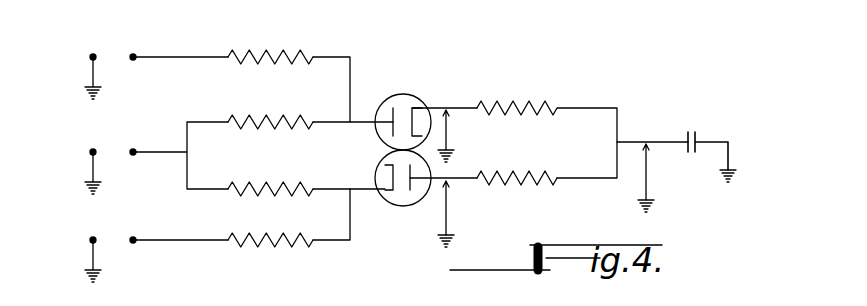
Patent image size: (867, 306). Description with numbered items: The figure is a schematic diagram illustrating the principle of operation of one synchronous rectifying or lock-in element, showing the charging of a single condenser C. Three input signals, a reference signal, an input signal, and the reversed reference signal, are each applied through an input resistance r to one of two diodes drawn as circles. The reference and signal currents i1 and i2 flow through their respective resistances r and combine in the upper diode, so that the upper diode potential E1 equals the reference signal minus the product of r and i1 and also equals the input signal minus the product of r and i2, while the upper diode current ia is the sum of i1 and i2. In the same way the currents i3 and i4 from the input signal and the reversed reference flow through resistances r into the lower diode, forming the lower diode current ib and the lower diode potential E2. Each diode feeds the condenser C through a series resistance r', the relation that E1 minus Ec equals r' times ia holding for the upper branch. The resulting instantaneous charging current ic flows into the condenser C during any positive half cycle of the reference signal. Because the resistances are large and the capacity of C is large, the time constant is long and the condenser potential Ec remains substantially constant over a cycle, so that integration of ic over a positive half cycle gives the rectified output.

The input resistance r is at (270, 140).
The diode series resistance r' is at (547, 131).
The current i1 is at (329, 46).
The current i2 is at (329, 110).
The current i3 is at (329, 175).
The current i4 is at (329, 228).
The upper diode current ia is at (479, 96).
The lower diode current ib is at (479, 166).
The condenser charging current ic is at (656, 136).
The upper diode potential E1 is at (446, 136).
The lower diode potential E2 is at (446, 214).
The condenser potential Ec is at (646, 178).
The condenser C is at (712, 145).